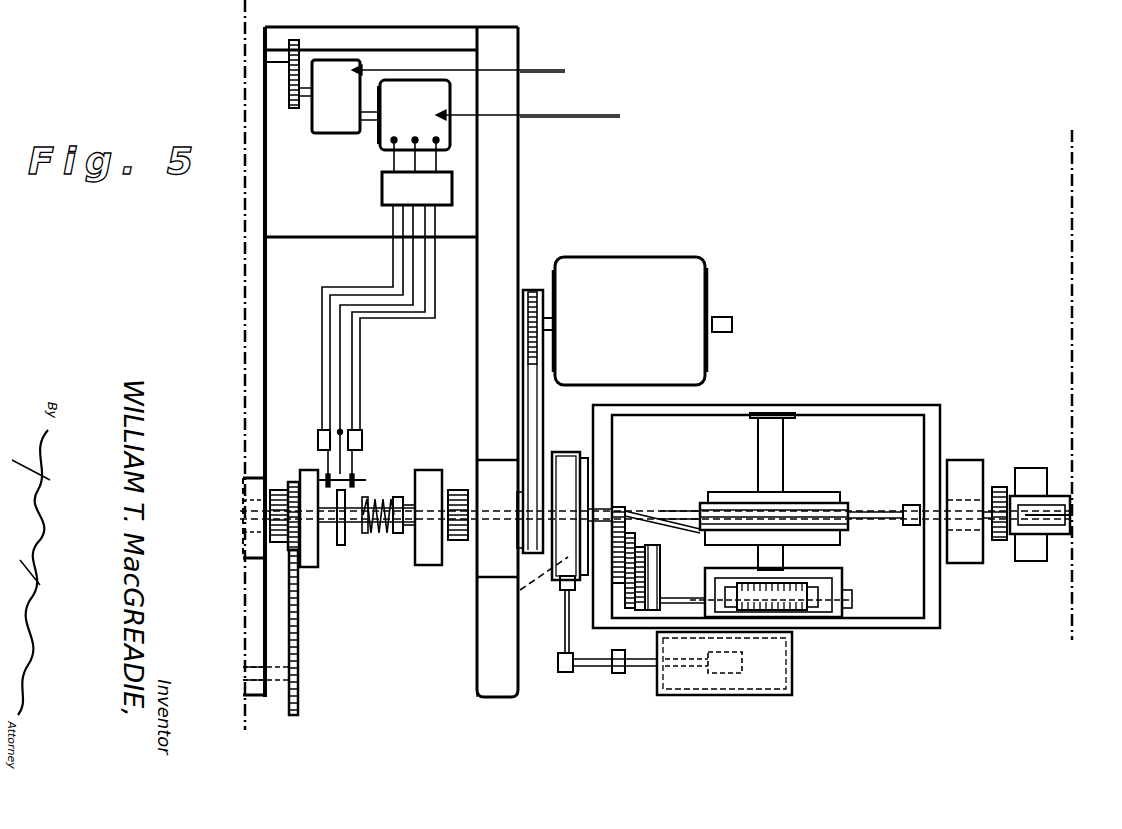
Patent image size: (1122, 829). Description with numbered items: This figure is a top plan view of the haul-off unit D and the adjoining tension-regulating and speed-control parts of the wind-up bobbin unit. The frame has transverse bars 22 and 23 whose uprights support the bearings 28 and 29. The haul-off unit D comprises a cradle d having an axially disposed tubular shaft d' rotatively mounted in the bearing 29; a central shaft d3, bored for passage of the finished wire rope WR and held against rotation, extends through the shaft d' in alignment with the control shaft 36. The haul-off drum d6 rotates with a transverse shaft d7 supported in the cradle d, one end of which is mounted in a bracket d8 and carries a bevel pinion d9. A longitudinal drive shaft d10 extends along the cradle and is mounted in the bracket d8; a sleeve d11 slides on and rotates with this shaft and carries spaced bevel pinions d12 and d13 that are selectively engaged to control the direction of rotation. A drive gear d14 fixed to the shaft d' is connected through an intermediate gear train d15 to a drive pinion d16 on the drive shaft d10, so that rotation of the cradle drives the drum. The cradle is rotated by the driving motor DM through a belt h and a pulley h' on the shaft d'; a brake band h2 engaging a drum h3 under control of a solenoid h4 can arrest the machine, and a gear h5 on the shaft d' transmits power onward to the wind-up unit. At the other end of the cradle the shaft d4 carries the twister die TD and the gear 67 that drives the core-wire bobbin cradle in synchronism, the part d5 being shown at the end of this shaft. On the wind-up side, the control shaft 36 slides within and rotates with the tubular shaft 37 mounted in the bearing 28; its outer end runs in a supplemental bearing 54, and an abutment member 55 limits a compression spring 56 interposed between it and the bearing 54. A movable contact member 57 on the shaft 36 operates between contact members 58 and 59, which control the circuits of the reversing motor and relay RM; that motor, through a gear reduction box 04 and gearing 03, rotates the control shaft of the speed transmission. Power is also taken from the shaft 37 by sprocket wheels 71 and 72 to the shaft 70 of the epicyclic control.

The gearing 03 is at (298, 40).
The gear reduction box 04 is at (332, 122).
The transverse bar 22 is at (255, 201).
The transverse bar 23 is at (519, 213).
The bearing 28 is at (243, 506).
The bearing 29 is at (476, 572).
The control shaft 36 is at (243, 521).
The tubular shaft 37 is at (243, 536).
The supplemental bearing 54 is at (397, 497).
The abutment member 55 is at (312, 568).
The compression spring 56 is at (386, 531).
The movable contact member 57 is at (342, 546).
The contact member 58 is at (327, 472).
The contact member 59 is at (356, 472).
The gear 67 is at (1000, 541).
The shaft 70 is at (270, 682).
The sprocket wheel 71 is at (291, 483).
The sprocket wheel 72 is at (298, 705).
The belt h is at (513, 421).
The pulley h' is at (503, 491).
The brake band h2 is at (566, 592).
The drum h3 is at (579, 458).
The solenoid h4 is at (770, 692).
The gear h5 is at (430, 566).
The cradle d is at (768, 497).
The tubular shaft d' is at (628, 512).
The central shaft d3 is at (524, 600).
The shaft d4 is at (964, 480).
The coupling d5 is at (987, 480).
The haul-off drum d6 is at (822, 504).
The transverse shaft d7 is at (780, 472).
The bracket d8 is at (835, 610).
The bevel pinion d9 is at (785, 580).
The drive shaft d10 is at (670, 640).
The sleeve d11 is at (792, 665).
The bevel pinion d12 is at (822, 600).
The bevel pinion d13 is at (742, 646).
The drive gear d14 is at (628, 500).
The intermediate gear train d15 is at (562, 673).
The drive pinion d16 is at (620, 675).
The haul-off unit D is at (826, 380).
The driving motor DM is at (657, 270).
The reversing motor and relay RM is at (455, 150).
The twister die TD is at (1058, 501).
The wire rope WR is at (662, 512).